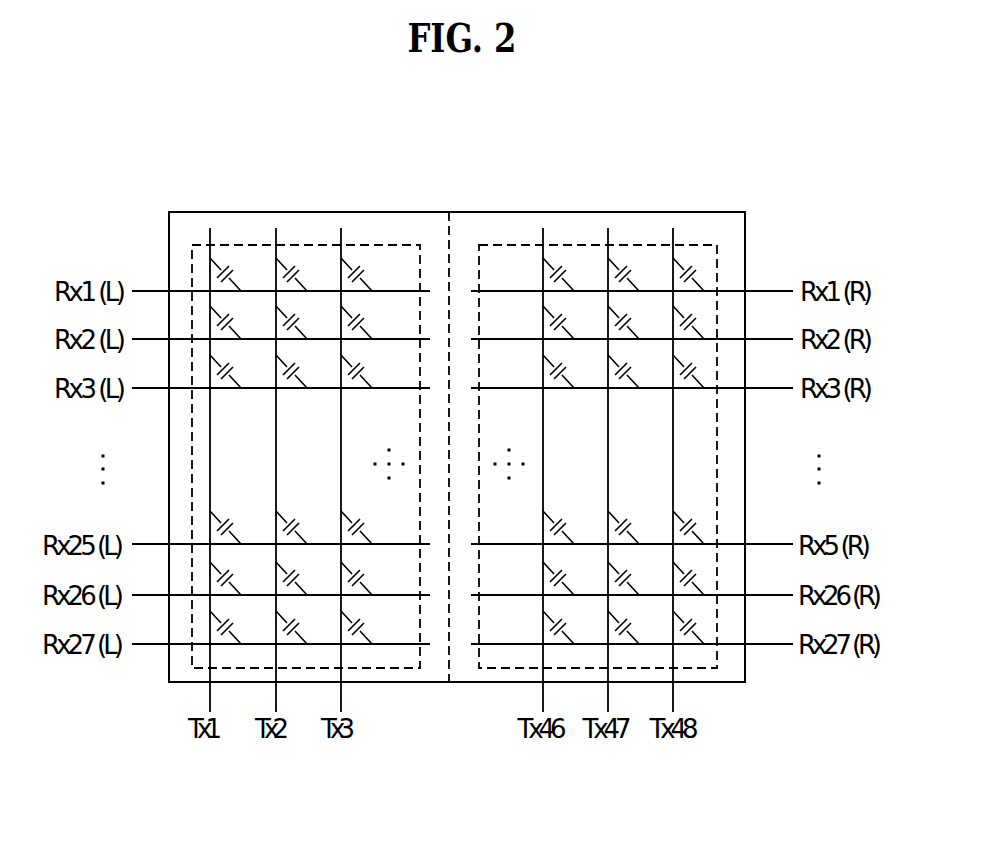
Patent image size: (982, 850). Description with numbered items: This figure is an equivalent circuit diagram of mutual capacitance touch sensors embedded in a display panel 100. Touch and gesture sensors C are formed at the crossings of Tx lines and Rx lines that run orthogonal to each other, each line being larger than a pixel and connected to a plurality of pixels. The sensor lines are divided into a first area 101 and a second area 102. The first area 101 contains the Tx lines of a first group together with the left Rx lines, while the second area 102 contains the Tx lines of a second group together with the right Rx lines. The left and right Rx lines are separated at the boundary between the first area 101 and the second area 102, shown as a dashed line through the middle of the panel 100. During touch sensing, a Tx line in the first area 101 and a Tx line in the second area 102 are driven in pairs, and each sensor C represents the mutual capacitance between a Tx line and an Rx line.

The display panel 100 is at (496, 212).
The first area 101 is at (313, 245).
The second area 102 is at (598, 245).
The touch and gesture sensors C is at (242, 262).